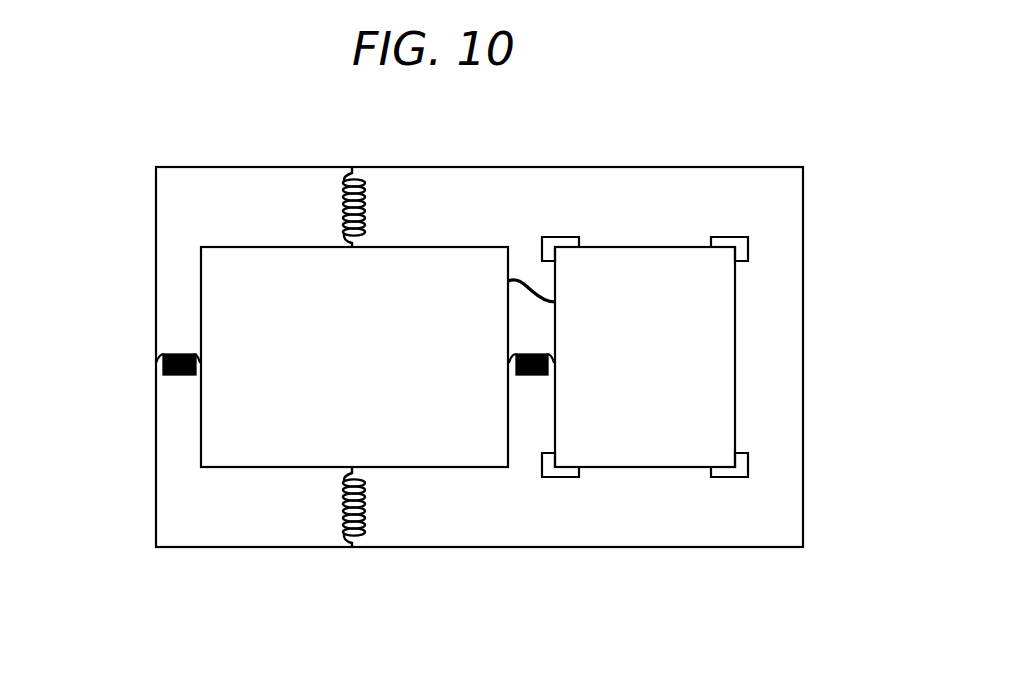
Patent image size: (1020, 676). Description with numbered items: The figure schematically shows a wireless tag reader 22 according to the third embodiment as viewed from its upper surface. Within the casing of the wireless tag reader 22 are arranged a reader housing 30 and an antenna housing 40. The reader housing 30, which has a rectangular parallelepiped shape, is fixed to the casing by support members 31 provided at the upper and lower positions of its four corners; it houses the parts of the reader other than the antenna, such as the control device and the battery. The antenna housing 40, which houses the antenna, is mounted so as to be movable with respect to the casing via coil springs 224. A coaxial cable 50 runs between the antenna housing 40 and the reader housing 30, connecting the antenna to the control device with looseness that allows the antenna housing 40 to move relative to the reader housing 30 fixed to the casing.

The wireless tag reader 22 is at (752, 163).
The antenna housing 40 is at (270, 467).
The reader housing 30 is at (613, 468).
The support members 31 is at (738, 470).
The coaxial cable 50 is at (533, 275).
The coil springs 224 is at (173, 353).